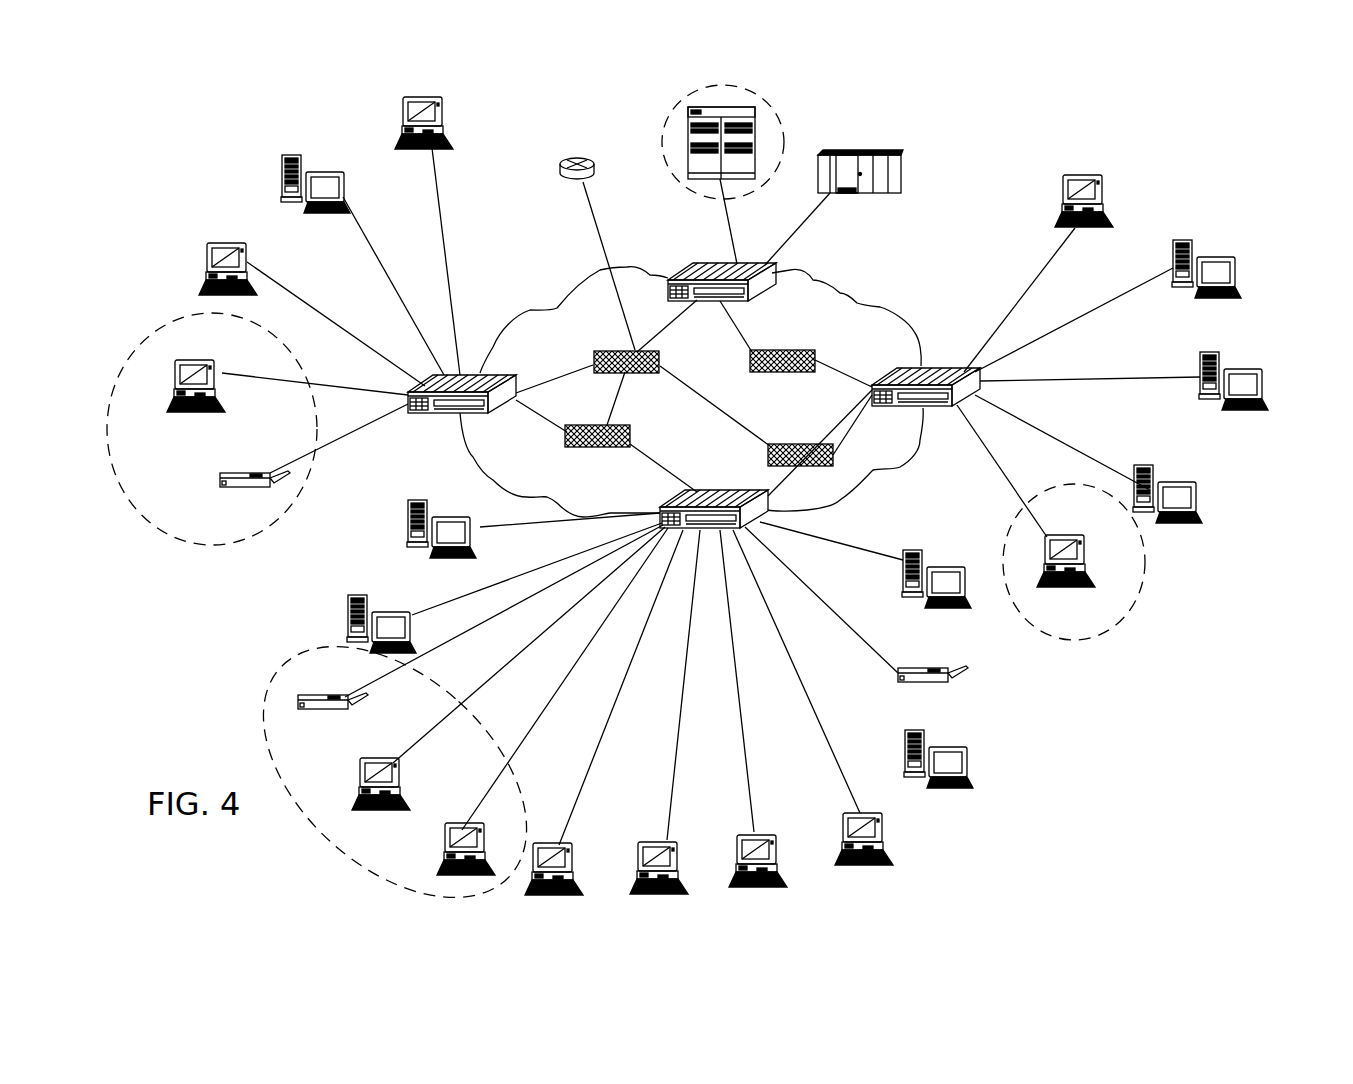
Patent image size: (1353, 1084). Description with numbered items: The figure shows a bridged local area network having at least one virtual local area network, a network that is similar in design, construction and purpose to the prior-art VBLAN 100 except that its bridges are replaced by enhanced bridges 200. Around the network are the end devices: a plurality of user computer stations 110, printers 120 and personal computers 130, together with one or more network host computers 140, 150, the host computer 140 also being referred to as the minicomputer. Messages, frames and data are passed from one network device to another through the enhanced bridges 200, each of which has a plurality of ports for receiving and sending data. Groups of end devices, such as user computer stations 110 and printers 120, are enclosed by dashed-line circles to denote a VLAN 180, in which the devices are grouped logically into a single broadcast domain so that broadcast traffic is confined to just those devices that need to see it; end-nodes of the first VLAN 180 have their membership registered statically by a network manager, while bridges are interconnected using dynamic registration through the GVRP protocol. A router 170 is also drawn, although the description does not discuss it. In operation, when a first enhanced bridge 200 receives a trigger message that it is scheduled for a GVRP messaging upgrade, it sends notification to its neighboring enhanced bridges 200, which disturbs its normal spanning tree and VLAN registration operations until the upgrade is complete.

The VBLAN 100 is at (1054, 119).
The user computer station 110 is at (441, 100).
The printer 120 is at (222, 478).
The personal computer 130 is at (280, 170).
The network host computer 140 is at (757, 112).
The network host computer 150 is at (893, 152).
The router 170 is at (559, 172).
The VLAN 180 is at (667, 128).
The enhanced bridge 200 is at (465, 372).